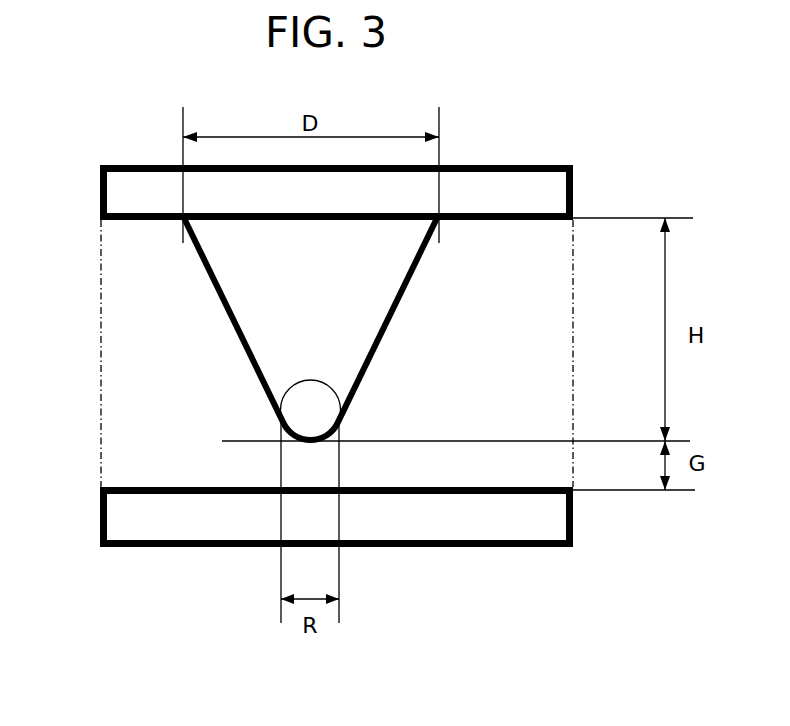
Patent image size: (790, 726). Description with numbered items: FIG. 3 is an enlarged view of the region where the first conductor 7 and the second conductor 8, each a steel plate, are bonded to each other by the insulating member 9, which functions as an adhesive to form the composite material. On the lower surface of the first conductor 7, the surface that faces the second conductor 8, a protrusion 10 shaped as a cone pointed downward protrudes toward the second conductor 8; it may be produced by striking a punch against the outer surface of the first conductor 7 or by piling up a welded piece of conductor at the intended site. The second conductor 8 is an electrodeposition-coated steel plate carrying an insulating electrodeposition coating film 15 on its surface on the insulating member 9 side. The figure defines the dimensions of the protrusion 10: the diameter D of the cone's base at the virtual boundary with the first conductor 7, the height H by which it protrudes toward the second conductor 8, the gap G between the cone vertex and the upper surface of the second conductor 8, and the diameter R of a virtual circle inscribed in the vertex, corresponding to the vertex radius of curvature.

The first conductor 7 is at (140, 165).
The second conductor 8 is at (163, 537).
The insulating member 9 is at (133, 340).
The protrusion 10 is at (387, 337).
The insulating electrodeposition coating film 15 is at (183, 485).